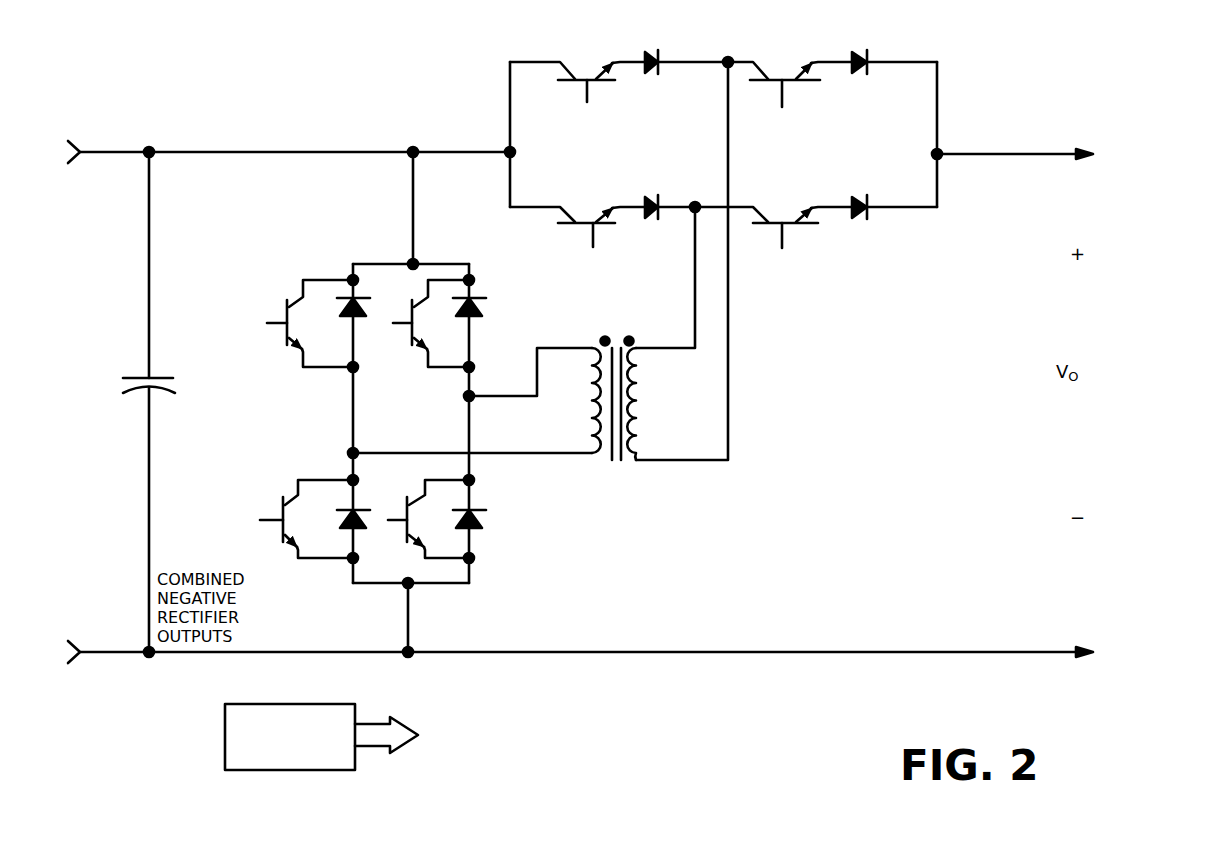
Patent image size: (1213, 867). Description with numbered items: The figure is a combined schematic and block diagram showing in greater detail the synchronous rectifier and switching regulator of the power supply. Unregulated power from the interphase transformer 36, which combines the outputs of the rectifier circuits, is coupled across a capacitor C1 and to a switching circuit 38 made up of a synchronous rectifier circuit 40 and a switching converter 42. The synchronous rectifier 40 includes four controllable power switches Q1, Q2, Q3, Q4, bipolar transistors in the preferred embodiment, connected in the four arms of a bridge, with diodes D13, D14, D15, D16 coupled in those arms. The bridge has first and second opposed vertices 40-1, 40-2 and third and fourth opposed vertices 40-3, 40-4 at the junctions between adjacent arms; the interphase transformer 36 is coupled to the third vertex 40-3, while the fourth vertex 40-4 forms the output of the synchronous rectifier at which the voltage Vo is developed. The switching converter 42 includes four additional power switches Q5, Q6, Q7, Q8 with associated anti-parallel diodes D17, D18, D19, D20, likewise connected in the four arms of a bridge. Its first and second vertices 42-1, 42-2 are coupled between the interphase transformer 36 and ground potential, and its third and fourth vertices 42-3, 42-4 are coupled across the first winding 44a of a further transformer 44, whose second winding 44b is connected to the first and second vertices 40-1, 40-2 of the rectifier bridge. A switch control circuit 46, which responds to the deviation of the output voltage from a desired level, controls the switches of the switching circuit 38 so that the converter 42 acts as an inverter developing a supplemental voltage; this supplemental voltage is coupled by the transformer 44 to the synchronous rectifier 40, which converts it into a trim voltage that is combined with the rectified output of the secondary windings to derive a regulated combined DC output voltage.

The interphase transformer 36 is at (214, 241).
The switching circuit 38 is at (770, 308).
The synchronous rectifier circuit 40 is at (508, 90).
The first vertex 40-1 is at (695, 210).
The second vertex 40-2 is at (728, 60).
The third vertex 40-3 is at (510, 150).
The fourth vertex 40-4 is at (938, 152).
The switching converter 42 is at (390, 264).
The first vertex 42-1 is at (414, 262).
The second vertex 42-2 is at (410, 586).
The third vertex 42-3 is at (353, 452).
The fourth vertex 42-4 is at (469, 397).
The further transformer 44 is at (622, 332).
The first winding 44a is at (588, 367).
The second winding 44b is at (635, 388).
The switch control circuit 46 is at (225, 718).
The capacitor C1 is at (133, 376).
The controllable power switch Q1 is at (573, 77).
The controllable power switch Q2 is at (573, 207).
The controllable power switch Q3 is at (783, 239).
The controllable power switch Q4 is at (756, 66).
The additional power switch Q5 is at (288, 305).
The additional power switch Q6 is at (410, 340).
The additional power switch Q7 is at (410, 538).
The additional power switch Q8 is at (283, 500).
The diode D13 is at (665, 73).
The diode D14 is at (664, 196).
The diode D15 is at (870, 216).
The diode D16 is at (867, 54).
The anti-parallel diode D17 is at (363, 300).
The anti-parallel diode D18 is at (363, 509).
The anti-parallel diode D19 is at (478, 315).
The anti-parallel diode D20 is at (481, 510).